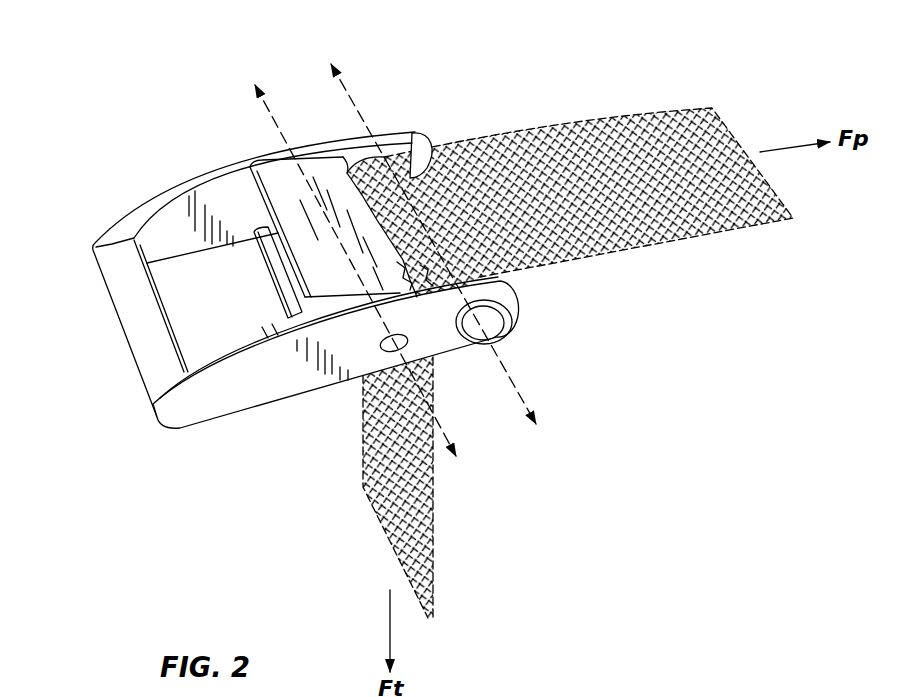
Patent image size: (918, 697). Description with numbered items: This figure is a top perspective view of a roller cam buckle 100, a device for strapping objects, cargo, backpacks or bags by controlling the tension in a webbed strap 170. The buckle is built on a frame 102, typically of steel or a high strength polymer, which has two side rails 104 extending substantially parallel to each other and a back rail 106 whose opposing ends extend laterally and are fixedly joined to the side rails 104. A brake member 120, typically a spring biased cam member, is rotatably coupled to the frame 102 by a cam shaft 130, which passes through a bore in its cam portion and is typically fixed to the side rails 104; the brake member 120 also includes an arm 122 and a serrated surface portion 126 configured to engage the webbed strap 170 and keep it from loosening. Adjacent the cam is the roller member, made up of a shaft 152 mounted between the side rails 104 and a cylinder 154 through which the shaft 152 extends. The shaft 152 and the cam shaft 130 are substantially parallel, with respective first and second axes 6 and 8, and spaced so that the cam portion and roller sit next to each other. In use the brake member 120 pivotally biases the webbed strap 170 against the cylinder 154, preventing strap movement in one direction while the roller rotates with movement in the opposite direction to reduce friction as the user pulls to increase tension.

The roller cam buckle 100 is at (120, 95).
The frame 102 is at (212, 437).
The side rails 104 is at (165, 228).
The back rail 106 is at (133, 325).
The brake member 120 is at (266, 172).
The arm 122 is at (287, 253).
The serrated surface portion 126 is at (343, 177).
The cam shaft 130 is at (382, 347).
The shaft 152 is at (492, 320).
The cylinder 154 is at (495, 258).
The webbed strap 170 is at (600, 122).
The first axis 6 is at (357, 110).
The second axis 8 is at (263, 107).